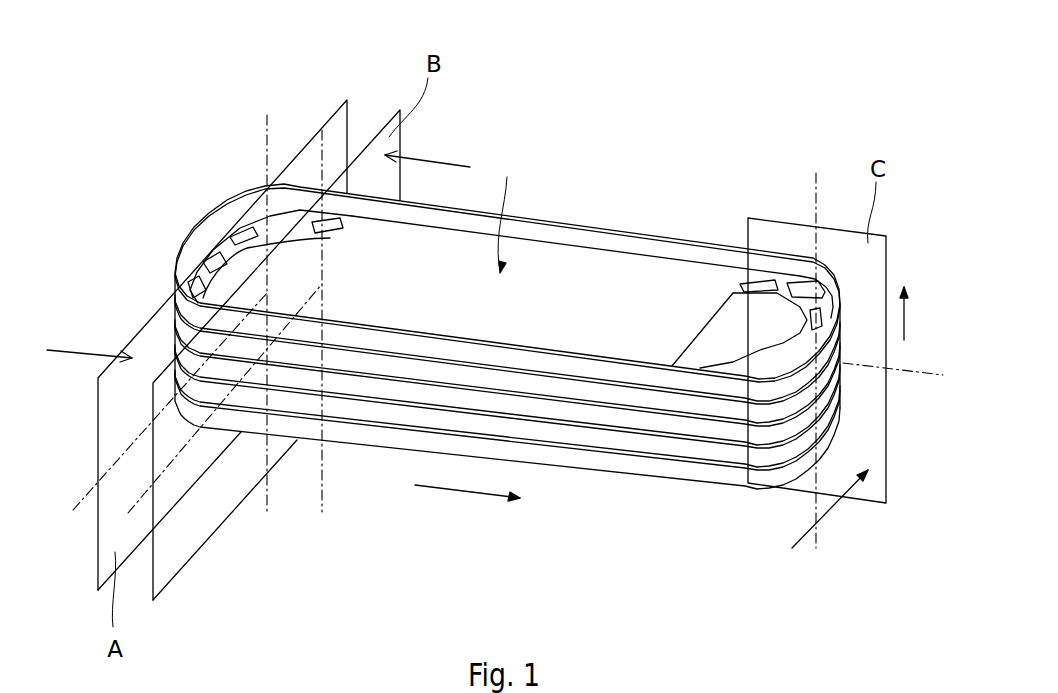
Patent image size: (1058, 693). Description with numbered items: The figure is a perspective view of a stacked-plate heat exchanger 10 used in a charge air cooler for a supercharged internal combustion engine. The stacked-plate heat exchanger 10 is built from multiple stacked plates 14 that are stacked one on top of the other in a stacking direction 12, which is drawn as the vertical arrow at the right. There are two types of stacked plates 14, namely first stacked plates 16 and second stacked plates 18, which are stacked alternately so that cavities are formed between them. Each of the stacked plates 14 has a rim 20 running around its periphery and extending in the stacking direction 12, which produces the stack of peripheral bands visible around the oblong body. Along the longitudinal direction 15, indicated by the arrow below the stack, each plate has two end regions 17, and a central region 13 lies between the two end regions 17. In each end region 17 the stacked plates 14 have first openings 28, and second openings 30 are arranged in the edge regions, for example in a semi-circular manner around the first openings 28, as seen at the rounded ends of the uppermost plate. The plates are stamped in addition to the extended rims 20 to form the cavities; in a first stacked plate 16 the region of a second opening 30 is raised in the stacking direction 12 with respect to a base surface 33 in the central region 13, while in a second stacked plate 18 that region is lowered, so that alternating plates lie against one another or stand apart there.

The stacked-plate heat exchanger 10 is at (517, 248).
The stacking direction 12 is at (907, 320).
The central region 13 is at (507, 212).
The stacked plates 14 is at (600, 238).
The longitudinal direction 15 is at (460, 493).
The first stacked plates 16 is at (507, 278).
The end region 17 is at (292, 134).
The second stacked plates 18 is at (507, 310).
The rim 20 is at (548, 230).
The first openings 28 is at (290, 268).
The second openings 30 is at (247, 223).
The base surface 33 is at (530, 325).